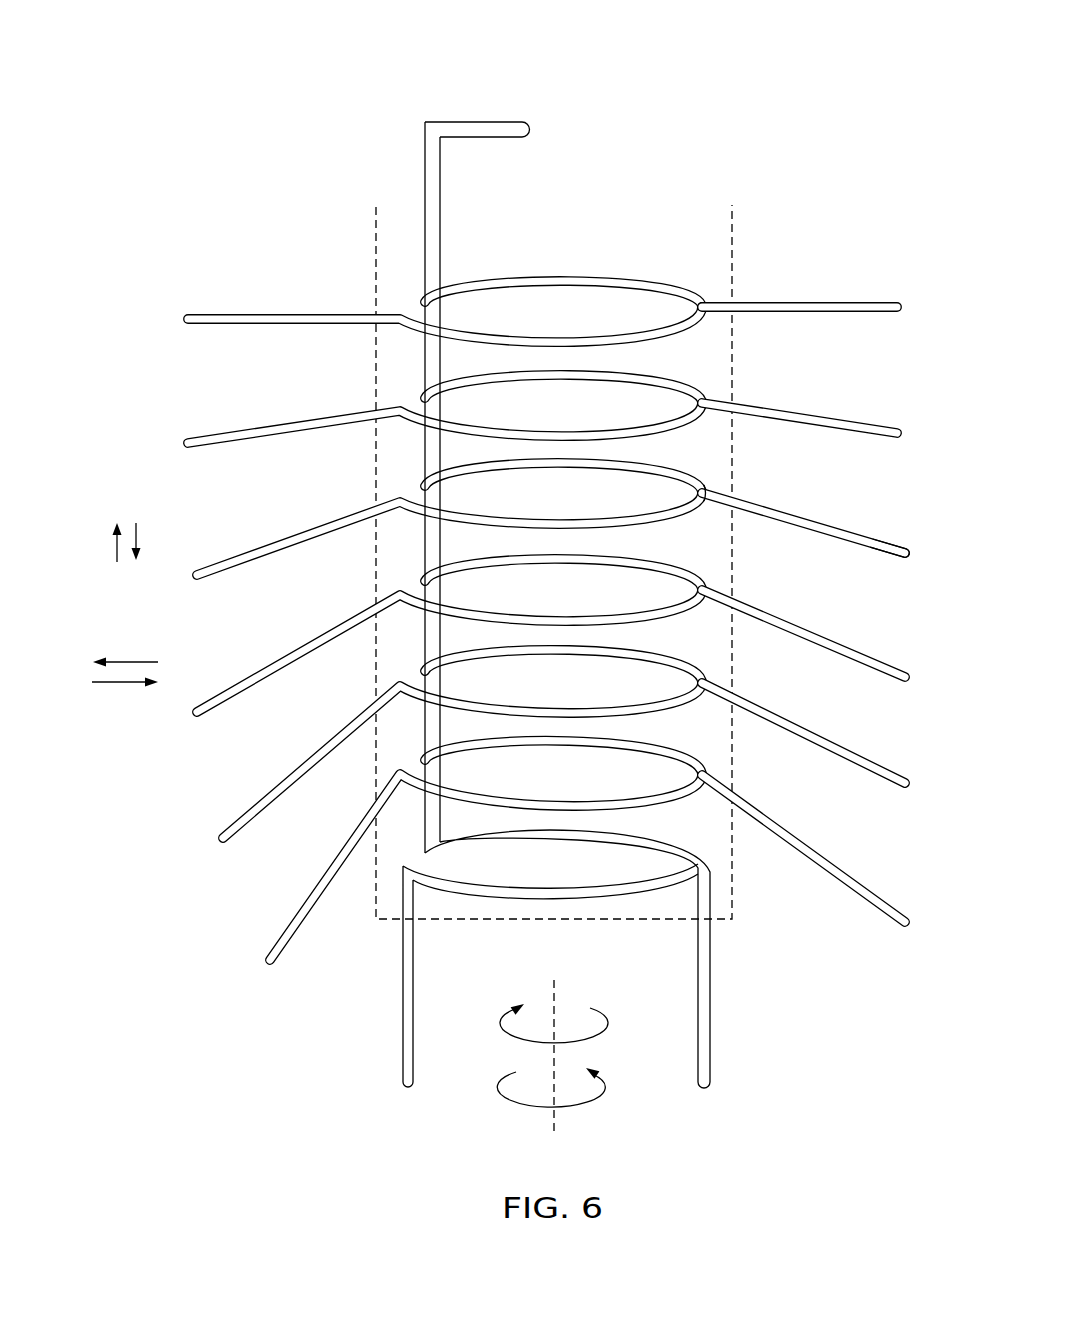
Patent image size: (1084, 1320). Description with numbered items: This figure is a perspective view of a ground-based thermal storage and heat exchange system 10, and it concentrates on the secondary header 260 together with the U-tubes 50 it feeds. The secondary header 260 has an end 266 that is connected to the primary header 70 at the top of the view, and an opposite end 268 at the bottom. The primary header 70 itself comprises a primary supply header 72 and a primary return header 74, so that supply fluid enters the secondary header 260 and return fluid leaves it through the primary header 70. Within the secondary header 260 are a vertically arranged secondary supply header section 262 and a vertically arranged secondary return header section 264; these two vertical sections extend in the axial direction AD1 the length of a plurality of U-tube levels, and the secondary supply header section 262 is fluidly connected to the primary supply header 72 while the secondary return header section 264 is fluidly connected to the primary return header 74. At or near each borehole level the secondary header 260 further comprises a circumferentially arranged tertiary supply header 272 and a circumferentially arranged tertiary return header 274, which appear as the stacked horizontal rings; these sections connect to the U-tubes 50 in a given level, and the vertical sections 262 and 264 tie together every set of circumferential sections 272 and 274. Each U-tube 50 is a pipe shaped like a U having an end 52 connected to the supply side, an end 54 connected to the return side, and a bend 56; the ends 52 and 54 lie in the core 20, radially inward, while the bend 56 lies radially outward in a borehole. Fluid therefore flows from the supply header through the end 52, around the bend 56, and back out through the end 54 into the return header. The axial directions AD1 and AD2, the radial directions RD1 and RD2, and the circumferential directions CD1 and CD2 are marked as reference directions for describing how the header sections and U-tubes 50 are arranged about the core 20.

The ground-based thermal storage and heat exchange system 10 is at (240, 116).
The core 20 is at (733, 650).
The U-tube 50 is at (831, 614).
The end 52 is at (712, 494).
The end 54 is at (703, 500).
The bend 56 is at (906, 556).
The primary header 70 is at (437, 434).
The primary supply header 72 is at (468, 140).
The primary return header 74 is at (497, 120).
The secondary header 260 is at (445, 568).
The secondary supply header section 262 is at (440, 196).
The secondary return header section 264 is at (425, 190).
The end 266 is at (424, 450).
The end 268 is at (380, 906).
The tertiary supply header 272 is at (492, 282).
The tertiary return header 274 is at (468, 294).
The axial direction AD1 is at (140, 534).
The axial direction AD2 is at (113, 545).
The radial direction RD1 is at (132, 662).
The radial direction RD2 is at (120, 684).
The circumferential direction CD1 is at (502, 1034).
The circumferential direction CD2 is at (598, 1093).